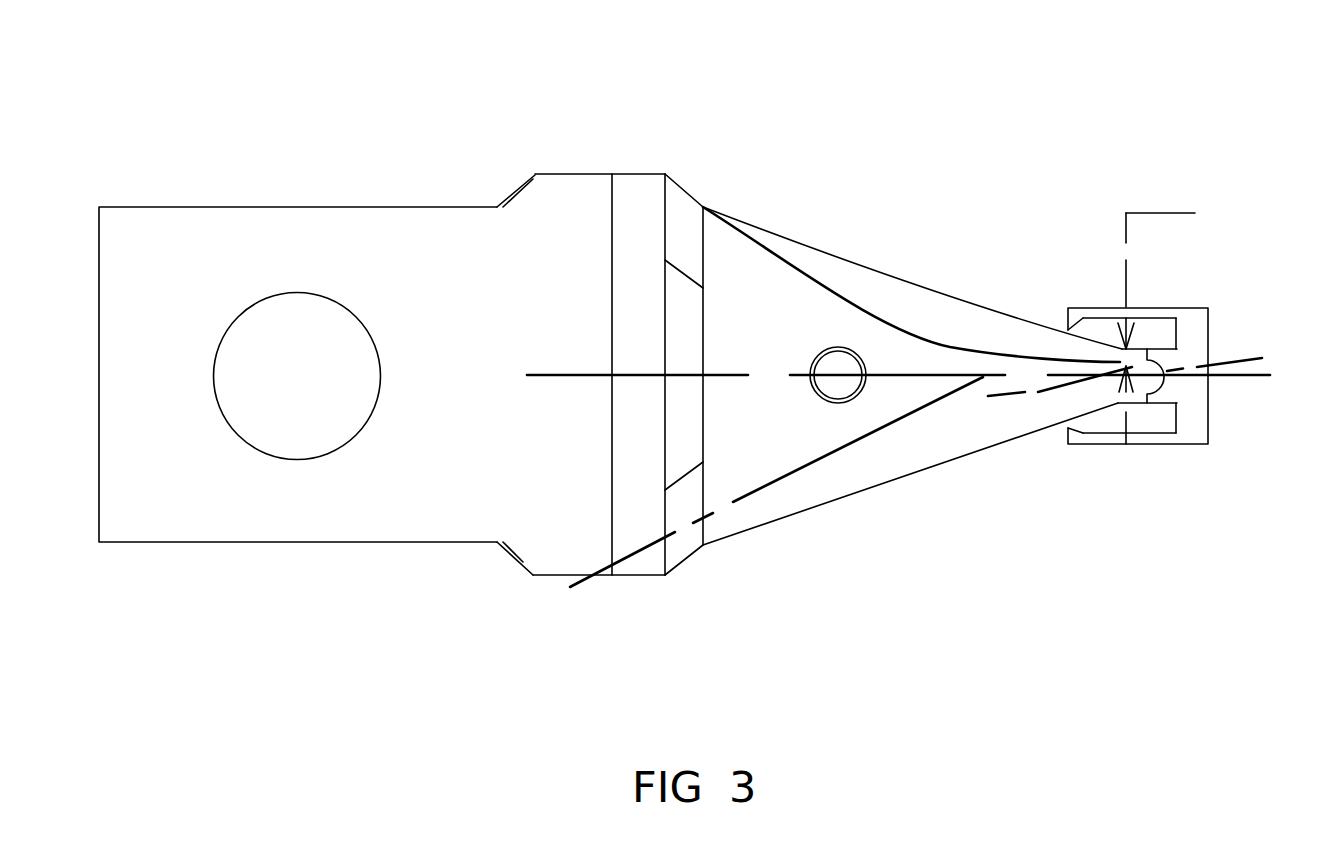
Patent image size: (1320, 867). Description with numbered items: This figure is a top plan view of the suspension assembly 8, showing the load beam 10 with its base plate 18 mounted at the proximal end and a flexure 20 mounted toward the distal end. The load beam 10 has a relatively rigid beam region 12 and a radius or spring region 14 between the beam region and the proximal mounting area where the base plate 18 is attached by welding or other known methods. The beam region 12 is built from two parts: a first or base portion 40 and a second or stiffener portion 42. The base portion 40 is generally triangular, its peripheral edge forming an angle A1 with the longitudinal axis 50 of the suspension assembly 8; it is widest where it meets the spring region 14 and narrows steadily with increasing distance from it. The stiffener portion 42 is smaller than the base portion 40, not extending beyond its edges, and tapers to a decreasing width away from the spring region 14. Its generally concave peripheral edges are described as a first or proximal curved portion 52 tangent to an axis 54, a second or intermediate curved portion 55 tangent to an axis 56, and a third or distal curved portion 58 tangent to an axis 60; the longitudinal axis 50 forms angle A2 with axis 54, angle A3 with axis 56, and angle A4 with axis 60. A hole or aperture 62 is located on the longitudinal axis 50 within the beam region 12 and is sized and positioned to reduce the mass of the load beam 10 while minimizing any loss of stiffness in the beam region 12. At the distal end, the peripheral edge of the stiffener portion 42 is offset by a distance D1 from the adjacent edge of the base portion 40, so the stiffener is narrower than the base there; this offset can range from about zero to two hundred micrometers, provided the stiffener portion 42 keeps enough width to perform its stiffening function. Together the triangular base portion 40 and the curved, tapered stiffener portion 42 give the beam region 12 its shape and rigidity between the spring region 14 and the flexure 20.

The suspension assembly 8 is at (383, 557).
The load beam 10 is at (939, 466).
The beam region 12 is at (971, 352).
The spring region 14 is at (687, 208).
The base plate 18 is at (431, 243).
The flexure 20 is at (1170, 446).
The base portion 40 is at (877, 285).
The stiffener portion 42 is at (770, 293).
The longitudinal axis 50 is at (547, 374).
The proximal curved portion 52 is at (853, 472).
The axis 54 is at (645, 547).
The intermediate curved portion 55 is at (963, 404).
The axis 56 is at (773, 376).
The distal curved portion 58 is at (1027, 405).
The axis 60 is at (1232, 378).
The aperture 62 is at (848, 362).
The angle A1 is at (1014, 356).
The angle A2 is at (938, 396).
The angle A3 is at (782, 423).
The angle A4 is at (1068, 388).
The offset distance D1 is at (1178, 321).